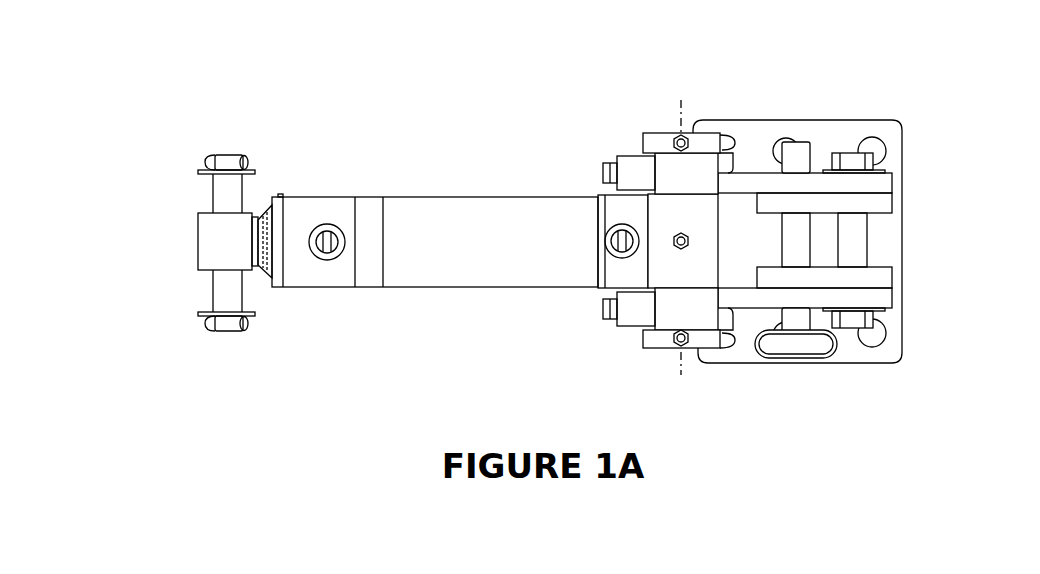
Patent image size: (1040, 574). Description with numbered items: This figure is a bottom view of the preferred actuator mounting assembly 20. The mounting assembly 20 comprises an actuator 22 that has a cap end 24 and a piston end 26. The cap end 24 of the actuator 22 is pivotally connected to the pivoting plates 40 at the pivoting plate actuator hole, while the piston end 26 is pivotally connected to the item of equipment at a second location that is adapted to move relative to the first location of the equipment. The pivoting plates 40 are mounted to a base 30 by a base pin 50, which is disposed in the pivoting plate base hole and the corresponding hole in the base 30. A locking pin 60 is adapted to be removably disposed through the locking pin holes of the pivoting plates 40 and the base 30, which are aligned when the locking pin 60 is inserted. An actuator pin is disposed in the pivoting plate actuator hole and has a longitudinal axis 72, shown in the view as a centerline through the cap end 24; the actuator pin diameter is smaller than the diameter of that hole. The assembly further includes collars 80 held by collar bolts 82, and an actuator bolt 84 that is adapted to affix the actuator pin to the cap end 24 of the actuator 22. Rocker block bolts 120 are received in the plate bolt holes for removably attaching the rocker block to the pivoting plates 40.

The mounting assembly 20 is at (750, 210).
The actuator 22 is at (470, 197).
The cap end 24 is at (647, 262).
The piston end 26 is at (190, 218).
The base 30 is at (843, 130).
The pivoting plates 40 is at (885, 183).
The base pin 50 is at (860, 247).
The locking pin 60 is at (805, 160).
The longitudinal axis 72 is at (686, 115).
The collars 80 is at (650, 142).
The collar bolts 82 is at (722, 393).
The actuator bolt 84 is at (675, 240).
The rocker block bolts 120 is at (600, 163).